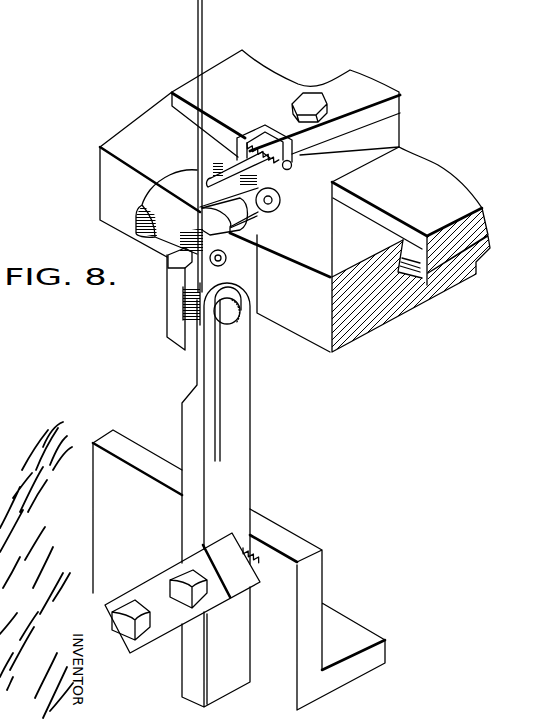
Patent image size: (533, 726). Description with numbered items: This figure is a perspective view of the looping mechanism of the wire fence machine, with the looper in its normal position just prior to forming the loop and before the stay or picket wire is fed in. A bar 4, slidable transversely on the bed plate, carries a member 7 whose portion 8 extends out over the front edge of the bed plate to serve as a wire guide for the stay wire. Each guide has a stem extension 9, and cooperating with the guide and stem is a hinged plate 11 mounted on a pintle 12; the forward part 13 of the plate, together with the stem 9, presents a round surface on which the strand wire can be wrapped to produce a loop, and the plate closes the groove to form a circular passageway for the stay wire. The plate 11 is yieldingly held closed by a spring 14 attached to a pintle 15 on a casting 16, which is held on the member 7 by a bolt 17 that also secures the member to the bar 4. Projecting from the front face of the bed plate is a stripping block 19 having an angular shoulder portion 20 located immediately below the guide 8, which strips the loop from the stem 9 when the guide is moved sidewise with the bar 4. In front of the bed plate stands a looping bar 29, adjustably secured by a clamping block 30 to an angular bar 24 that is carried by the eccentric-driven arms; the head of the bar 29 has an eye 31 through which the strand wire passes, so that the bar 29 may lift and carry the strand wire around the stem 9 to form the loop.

The bar 4 is at (411, 249).
The member 7 is at (346, 137).
The wire guide 8 is at (150, 225).
The stem extension 9 is at (187, 264).
The hinged plate 11 is at (192, 212).
The pintle 12 is at (279, 207).
The part of the plate 13 is at (230, 258).
The spring 14 is at (215, 167).
The pintle 15 is at (290, 169).
The casting 16 is at (286, 103).
The bolt 17 is at (315, 100).
The stripping block 19 is at (252, 281).
The angular shoulder portion 20 is at (172, 261).
The angular bar 24 is at (239, 570).
The looping bar 29 is at (236, 388).
The clamping block 30 is at (215, 608).
The eye 31 is at (243, 325).